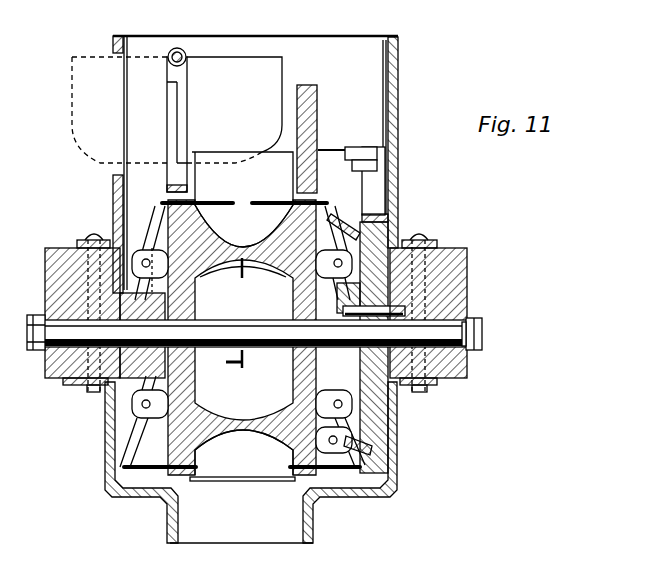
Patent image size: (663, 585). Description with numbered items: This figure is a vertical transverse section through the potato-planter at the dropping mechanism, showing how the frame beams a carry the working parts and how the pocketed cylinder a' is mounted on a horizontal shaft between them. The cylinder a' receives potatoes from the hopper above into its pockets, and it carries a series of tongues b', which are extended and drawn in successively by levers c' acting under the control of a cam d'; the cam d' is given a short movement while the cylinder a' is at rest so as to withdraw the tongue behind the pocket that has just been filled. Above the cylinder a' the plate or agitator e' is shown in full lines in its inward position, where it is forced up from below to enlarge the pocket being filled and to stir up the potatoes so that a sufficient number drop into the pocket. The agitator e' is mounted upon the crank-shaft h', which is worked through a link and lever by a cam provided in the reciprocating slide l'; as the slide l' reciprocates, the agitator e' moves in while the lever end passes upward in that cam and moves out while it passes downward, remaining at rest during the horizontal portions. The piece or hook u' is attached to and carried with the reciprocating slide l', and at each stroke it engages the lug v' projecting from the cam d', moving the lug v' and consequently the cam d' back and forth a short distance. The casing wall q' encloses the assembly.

The beams a is at (254, 313).
The cylinder a' is at (232, 337).
The tongues b' is at (242, 328).
The levers c' is at (243, 326).
The cam d' is at (387, 341).
The plate or agitator e' is at (177, 124).
The crank-shaft h' is at (199, 37).
The reciprocating slide l' is at (324, 137).
The casing q' is at (251, 289).
The piece or hook u' is at (347, 145).
The lug v' is at (393, 184).